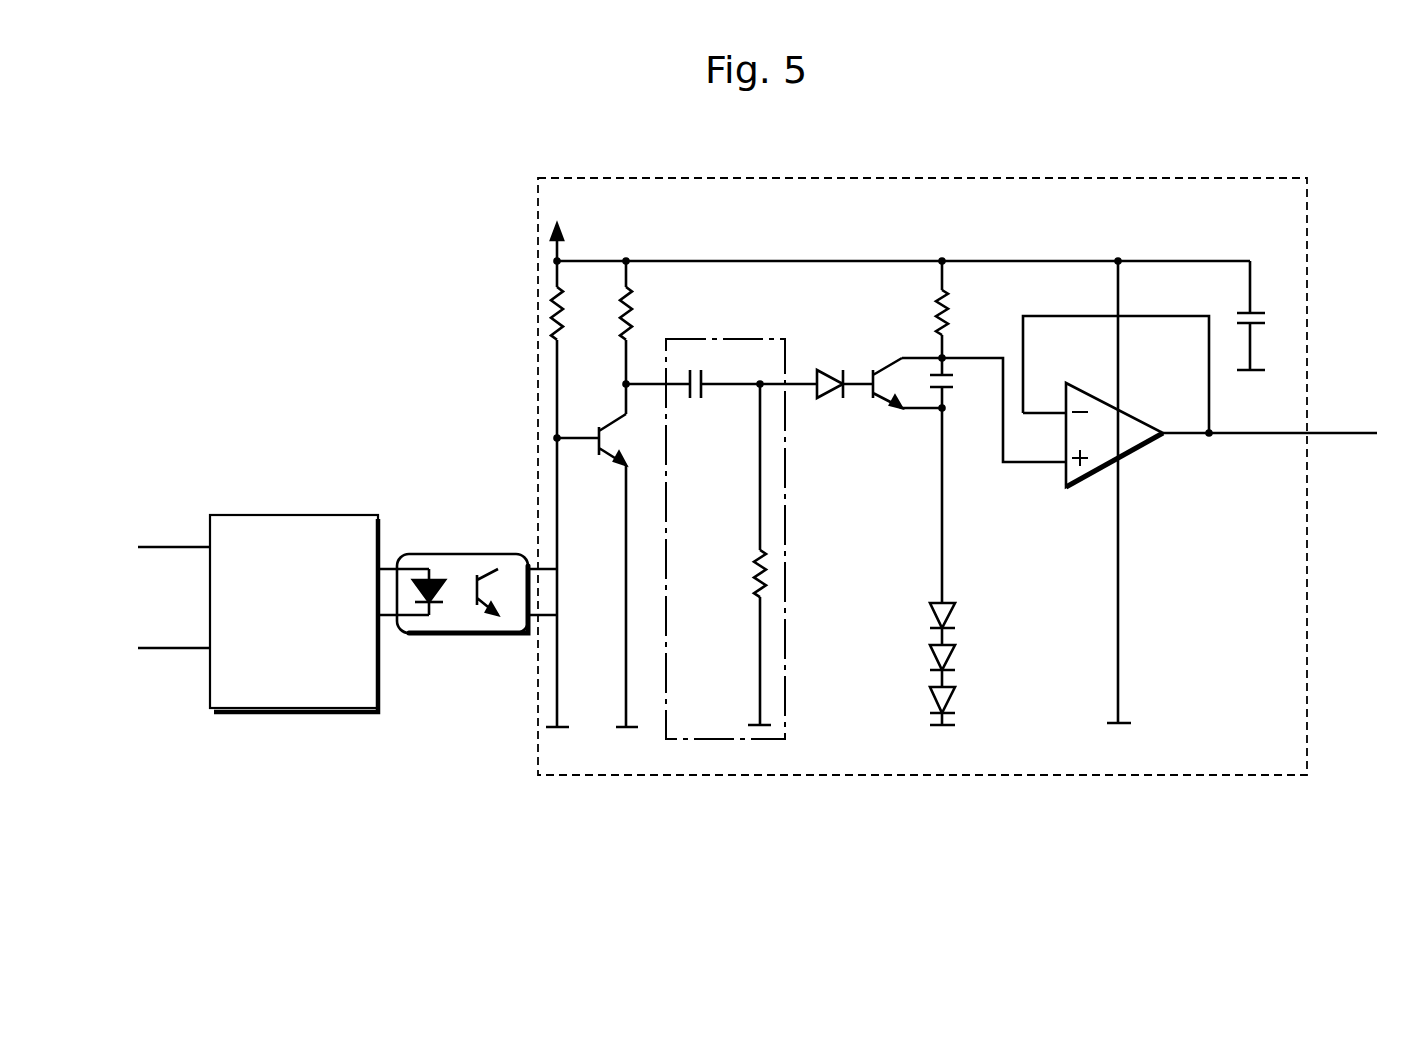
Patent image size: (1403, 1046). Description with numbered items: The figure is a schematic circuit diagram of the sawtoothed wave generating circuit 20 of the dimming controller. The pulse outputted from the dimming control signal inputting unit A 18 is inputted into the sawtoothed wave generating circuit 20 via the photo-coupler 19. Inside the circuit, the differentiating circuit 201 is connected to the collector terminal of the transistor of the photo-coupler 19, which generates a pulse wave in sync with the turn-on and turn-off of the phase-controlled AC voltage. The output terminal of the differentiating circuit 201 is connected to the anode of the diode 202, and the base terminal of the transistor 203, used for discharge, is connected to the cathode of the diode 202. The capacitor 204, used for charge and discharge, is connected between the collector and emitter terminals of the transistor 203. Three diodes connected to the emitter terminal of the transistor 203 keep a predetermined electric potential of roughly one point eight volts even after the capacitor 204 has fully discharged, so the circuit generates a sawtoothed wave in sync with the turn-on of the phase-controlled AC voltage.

The dimming control signal inputting unit A 18 is at (327, 516).
The photo-coupler 19 is at (455, 556).
The sawtoothed wave generating circuit 20 is at (823, 179).
The differentiating circuit 201 is at (702, 739).
The diode 202 is at (843, 398).
The transistor 203 is at (873, 378).
The capacitor 204 is at (950, 390).